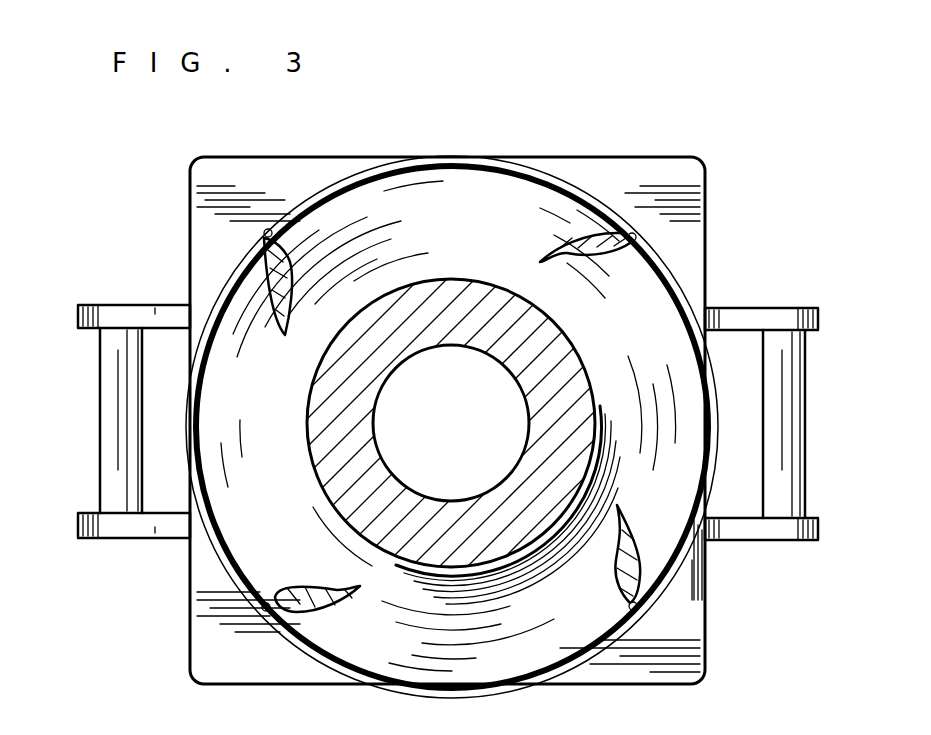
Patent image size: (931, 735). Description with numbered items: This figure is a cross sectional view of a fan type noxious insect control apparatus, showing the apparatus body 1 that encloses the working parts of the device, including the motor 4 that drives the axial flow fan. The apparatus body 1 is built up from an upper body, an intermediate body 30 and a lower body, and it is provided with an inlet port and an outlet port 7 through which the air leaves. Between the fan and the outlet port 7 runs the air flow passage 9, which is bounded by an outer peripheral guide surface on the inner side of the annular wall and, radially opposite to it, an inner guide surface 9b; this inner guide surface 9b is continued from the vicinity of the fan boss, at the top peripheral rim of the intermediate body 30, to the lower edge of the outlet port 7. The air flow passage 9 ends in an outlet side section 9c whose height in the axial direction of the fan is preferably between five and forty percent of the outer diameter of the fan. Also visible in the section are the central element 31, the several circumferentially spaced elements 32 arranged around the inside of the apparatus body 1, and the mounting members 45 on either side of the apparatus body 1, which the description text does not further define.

The apparatus body 1 is at (728, 201).
The motor 4 is at (505, 418).
The outlet port 7 is at (543, 177).
The air flow passage 9 is at (452, 613).
The inner guide surface 9b is at (375, 633).
The outlet side section 9c is at (413, 203).
The intermediate body 30 is at (498, 528).
The central bore 31 is at (383, 388).
The tabs 32 is at (270, 268).
The mounting brackets 45 is at (112, 399).